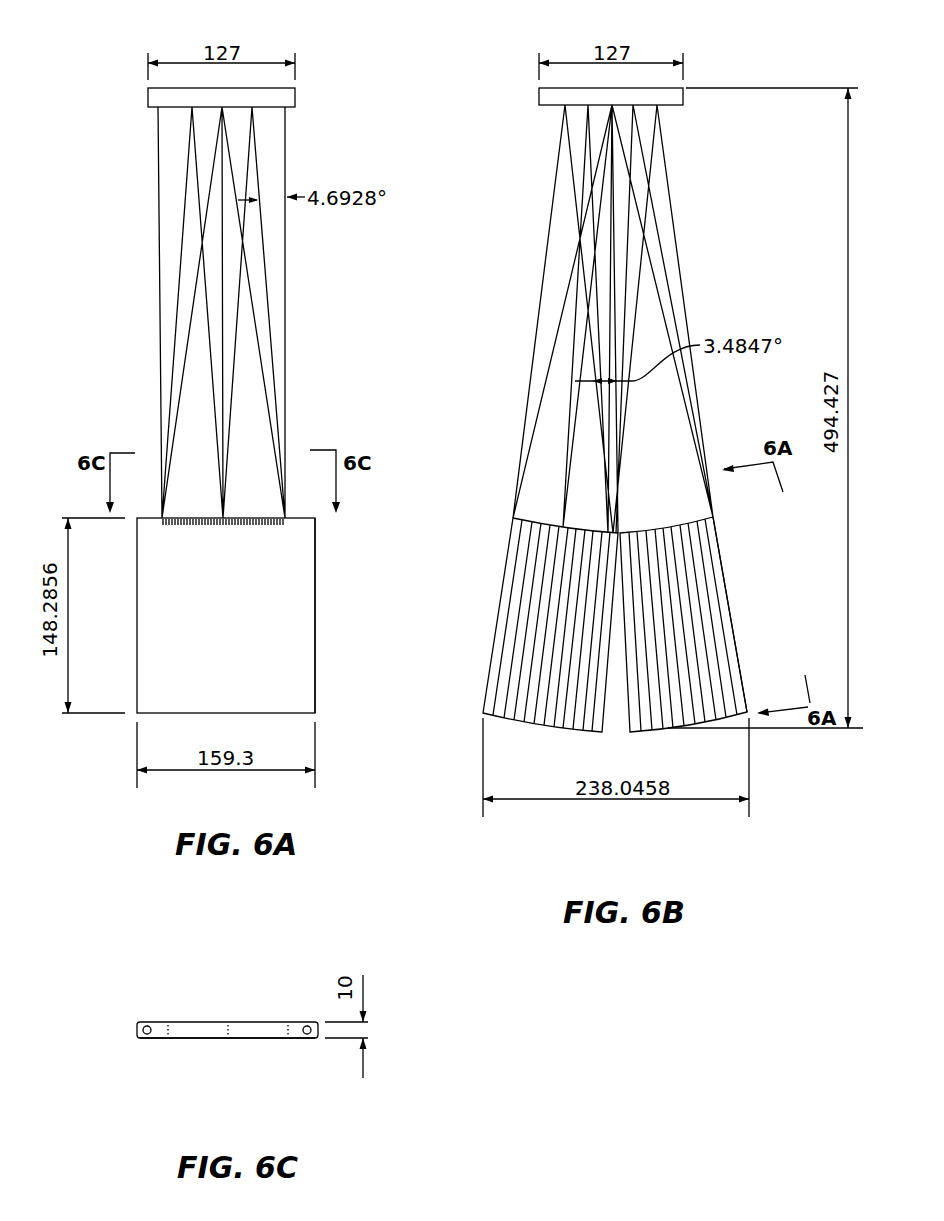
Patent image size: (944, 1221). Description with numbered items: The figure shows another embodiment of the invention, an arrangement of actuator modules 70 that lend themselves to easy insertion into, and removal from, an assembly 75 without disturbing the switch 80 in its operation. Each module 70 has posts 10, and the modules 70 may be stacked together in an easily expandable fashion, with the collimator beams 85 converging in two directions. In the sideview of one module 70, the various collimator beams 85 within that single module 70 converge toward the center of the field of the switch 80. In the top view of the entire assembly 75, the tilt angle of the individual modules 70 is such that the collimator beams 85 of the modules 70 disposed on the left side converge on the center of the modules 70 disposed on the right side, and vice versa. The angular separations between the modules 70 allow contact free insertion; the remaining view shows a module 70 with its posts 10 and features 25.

In FIG. 6A, the switch 80 is at (105, 80).
In FIG. 6B, the switch 80 is at (511, 68).
In FIG. 6A, the collimator beams 85 is at (155, 358).
In FIG. 6B, the collimator beams 85 is at (536, 309).
In FIG. 6A, the module 70 is at (237, 634).
In FIG. 6B, the module 70 is at (527, 724).
In FIG. 6C, the module 70 is at (202, 1041).
In FIG. 6A, the assembly 75 is at (320, 611).
In FIG. 6B, the assembly 75 is at (738, 606).
In FIG. 6C, the post 10 is at (268, 1034).
In FIG. 6C, the mounting hole 25 is at (147, 1034).